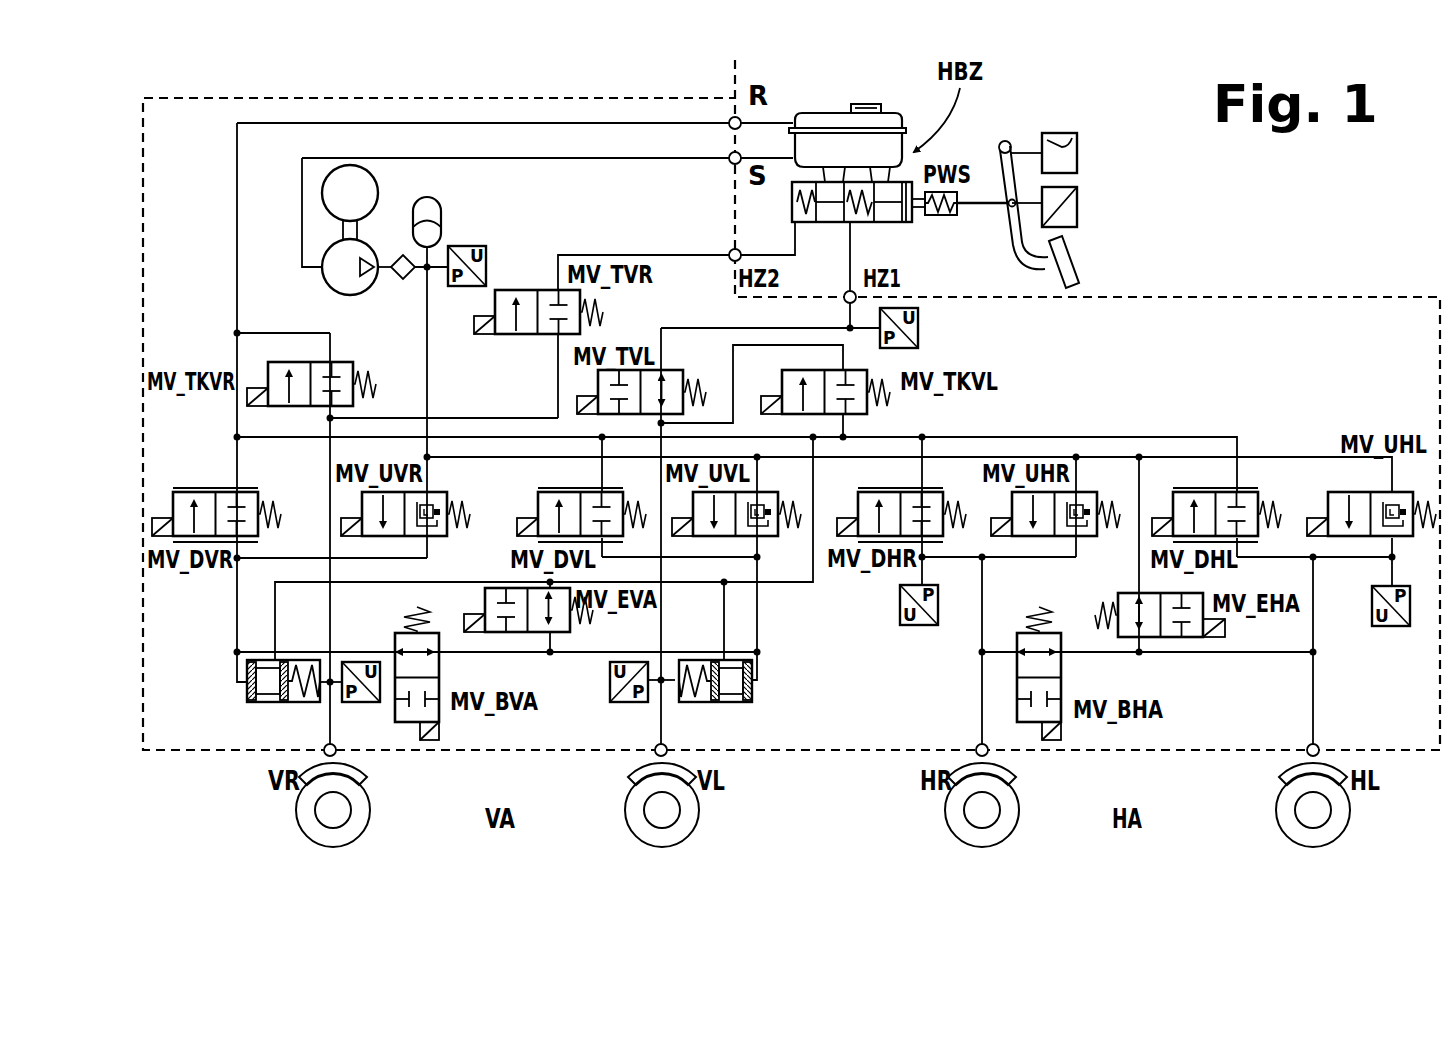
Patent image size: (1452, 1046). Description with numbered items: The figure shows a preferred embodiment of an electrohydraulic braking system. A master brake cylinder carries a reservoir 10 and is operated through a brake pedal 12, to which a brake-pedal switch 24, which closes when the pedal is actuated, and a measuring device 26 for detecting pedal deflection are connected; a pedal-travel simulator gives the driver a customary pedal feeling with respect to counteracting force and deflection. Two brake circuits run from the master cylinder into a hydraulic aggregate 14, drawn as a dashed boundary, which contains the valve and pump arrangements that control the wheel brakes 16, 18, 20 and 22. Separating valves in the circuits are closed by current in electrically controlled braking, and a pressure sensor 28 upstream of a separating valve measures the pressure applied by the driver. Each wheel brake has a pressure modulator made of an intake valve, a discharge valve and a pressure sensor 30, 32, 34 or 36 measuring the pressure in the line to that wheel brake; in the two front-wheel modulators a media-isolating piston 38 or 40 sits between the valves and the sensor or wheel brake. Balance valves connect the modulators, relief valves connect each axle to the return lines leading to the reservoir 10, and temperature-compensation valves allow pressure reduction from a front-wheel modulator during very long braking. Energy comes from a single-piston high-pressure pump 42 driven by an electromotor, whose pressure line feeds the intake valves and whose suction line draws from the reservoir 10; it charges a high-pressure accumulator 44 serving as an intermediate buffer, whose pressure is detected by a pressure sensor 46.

The reservoir 10 is at (827, 113).
The brake pedal 12 is at (1070, 252).
The hydraulic aggregate 14 is at (791, 391).
The wheel brake 16 is at (359, 850).
The wheel brake 18 is at (688, 850).
The wheel brake 20 is at (957, 849).
The wheel brake 22 is at (1288, 849).
The brake-pedal switch 24 is at (1077, 138).
The measuring device 26 is at (1077, 192).
The pressure sensor 28 is at (918, 345).
The pressure sensor 30 is at (364, 702).
The pressure sensor 32 is at (630, 702).
The pressure sensor 34 is at (922, 625).
The pressure sensor 36 is at (1392, 625).
The media-isolating piston 38 is at (257, 702).
The media-isolating piston 40 is at (742, 702).
The high-pressure pump 42 is at (342, 282).
The high-pressure accumulator 44 is at (458, 200).
The pressure sensor 46 is at (486, 266).